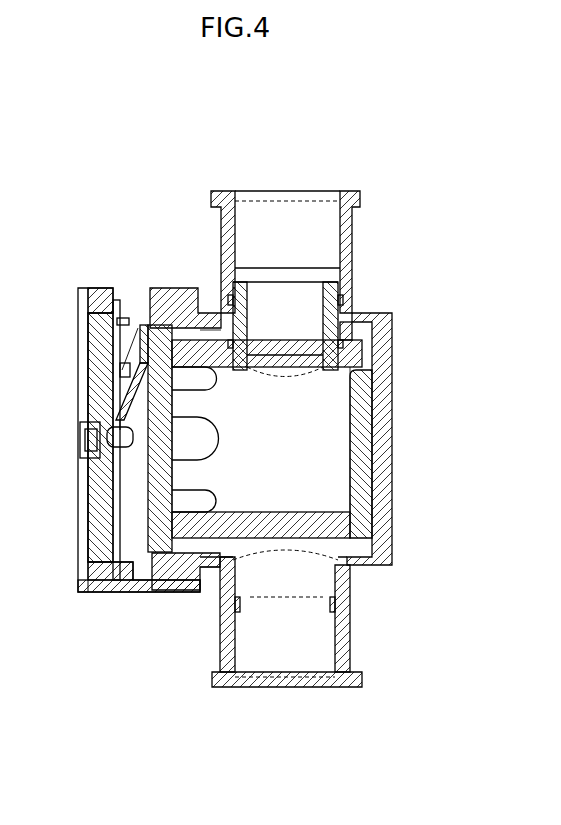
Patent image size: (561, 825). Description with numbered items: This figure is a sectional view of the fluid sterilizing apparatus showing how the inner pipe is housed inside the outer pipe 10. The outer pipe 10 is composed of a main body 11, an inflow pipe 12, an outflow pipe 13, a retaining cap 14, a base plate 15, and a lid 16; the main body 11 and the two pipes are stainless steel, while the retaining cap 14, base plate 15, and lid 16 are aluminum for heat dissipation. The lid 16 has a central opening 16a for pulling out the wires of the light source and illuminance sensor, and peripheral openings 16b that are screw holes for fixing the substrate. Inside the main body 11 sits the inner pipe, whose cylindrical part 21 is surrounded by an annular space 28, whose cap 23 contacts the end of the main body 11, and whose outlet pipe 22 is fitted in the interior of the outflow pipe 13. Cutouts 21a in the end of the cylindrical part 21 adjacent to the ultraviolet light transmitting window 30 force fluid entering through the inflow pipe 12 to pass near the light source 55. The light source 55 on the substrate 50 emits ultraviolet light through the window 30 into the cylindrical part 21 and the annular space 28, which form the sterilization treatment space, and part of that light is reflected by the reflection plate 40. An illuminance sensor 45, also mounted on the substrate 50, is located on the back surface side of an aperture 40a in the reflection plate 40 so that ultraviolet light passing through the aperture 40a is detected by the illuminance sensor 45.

The outer pipe 10 is at (438, 197).
The main body 11 is at (392, 385).
The inflow pipe 12 is at (293, 688).
The outflow pipe 13 is at (270, 196).
The retaining cap 14 is at (133, 595).
The base plate 15 is at (96, 333).
The lid 16 is at (83, 595).
The opening 16a is at (80, 436).
The openings 16b is at (80, 300).
The cylindrical part 21 is at (297, 453).
The cutouts 21a is at (243, 412).
The outlet pipe 22 is at (340, 305).
The cap 23 is at (374, 492).
The annular space 28 is at (212, 330).
The ultraviolet light transmitting window 30 is at (157, 328).
The reflection plate 40 is at (138, 328).
The aperture 40a is at (118, 289).
The illuminance sensor 45 is at (113, 380).
The substrate 50 is at (117, 520).
The light source 55 is at (117, 443).